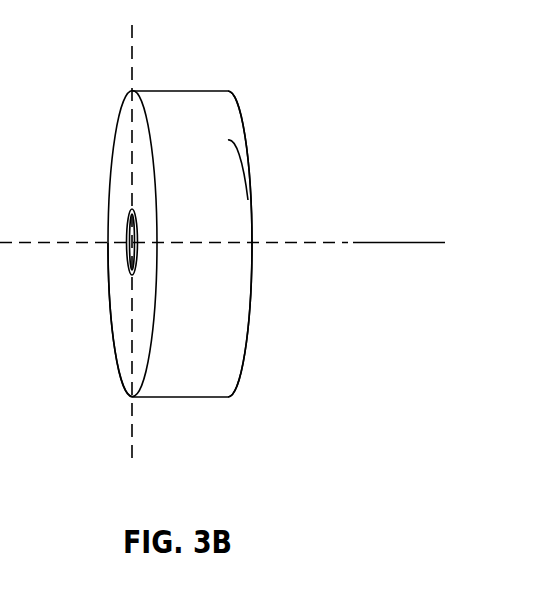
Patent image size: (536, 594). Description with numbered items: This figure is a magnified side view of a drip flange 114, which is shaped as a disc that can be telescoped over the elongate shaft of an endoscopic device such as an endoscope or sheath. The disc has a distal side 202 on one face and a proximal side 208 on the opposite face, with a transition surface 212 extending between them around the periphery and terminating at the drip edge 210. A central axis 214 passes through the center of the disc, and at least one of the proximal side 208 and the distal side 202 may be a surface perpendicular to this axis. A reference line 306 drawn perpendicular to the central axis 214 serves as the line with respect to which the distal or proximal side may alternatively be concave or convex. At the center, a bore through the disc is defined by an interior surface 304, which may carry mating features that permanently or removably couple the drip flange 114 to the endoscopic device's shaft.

The drip flange 114 is at (180, 84).
The distal side 202 is at (127, 124).
The proximal side 208 is at (245, 123).
The transition surface 212 is at (227, 183).
The drip edge 210 is at (120, 377).
The interior surface 304 is at (128, 245).
The reference line 306 is at (130, 47).
The central axis 214 is at (358, 242).